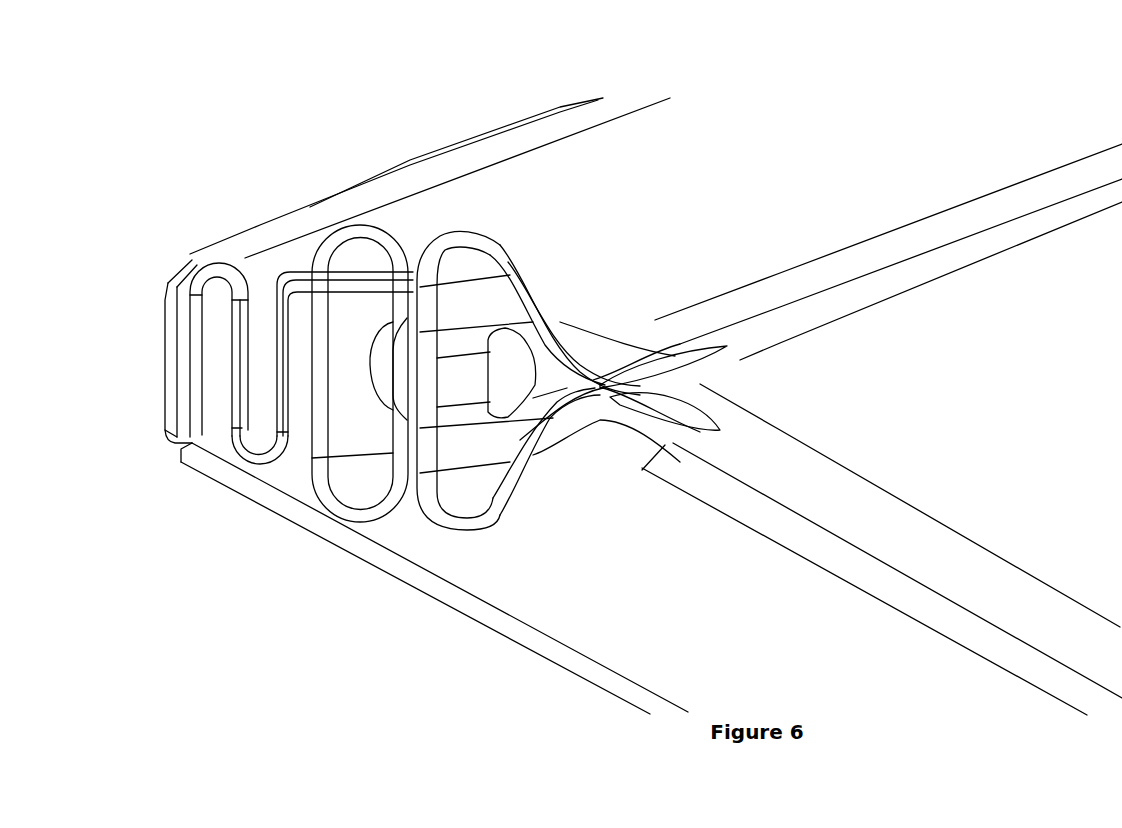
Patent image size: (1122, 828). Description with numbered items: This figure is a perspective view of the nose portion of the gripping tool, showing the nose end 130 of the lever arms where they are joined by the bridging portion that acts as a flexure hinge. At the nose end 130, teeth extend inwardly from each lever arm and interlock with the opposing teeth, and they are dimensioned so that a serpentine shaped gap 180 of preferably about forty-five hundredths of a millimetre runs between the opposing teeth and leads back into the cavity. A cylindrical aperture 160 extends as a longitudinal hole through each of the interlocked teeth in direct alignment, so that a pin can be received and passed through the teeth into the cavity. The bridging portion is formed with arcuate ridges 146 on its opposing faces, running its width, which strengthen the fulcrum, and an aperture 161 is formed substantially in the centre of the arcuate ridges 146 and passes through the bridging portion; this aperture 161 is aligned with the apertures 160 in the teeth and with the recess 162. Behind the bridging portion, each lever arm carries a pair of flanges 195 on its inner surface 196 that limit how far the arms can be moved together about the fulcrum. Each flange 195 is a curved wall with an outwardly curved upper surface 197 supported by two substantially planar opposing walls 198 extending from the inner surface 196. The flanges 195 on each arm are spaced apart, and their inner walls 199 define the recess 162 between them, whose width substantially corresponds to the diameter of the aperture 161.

The nose end 130 is at (298, 250).
The gap 180 is at (219, 265).
The aperture 160 is at (397, 332).
The aperture 161 is at (517, 377).
The arcuate ridges 146 is at (445, 377).
The flanges 195 is at (596, 359).
The upper surface 197 is at (605, 393).
The inner surface 196 is at (818, 311).
The recess 162 is at (695, 367).
The opposing walls 198 is at (593, 403).
The inner walls 199 is at (668, 405).